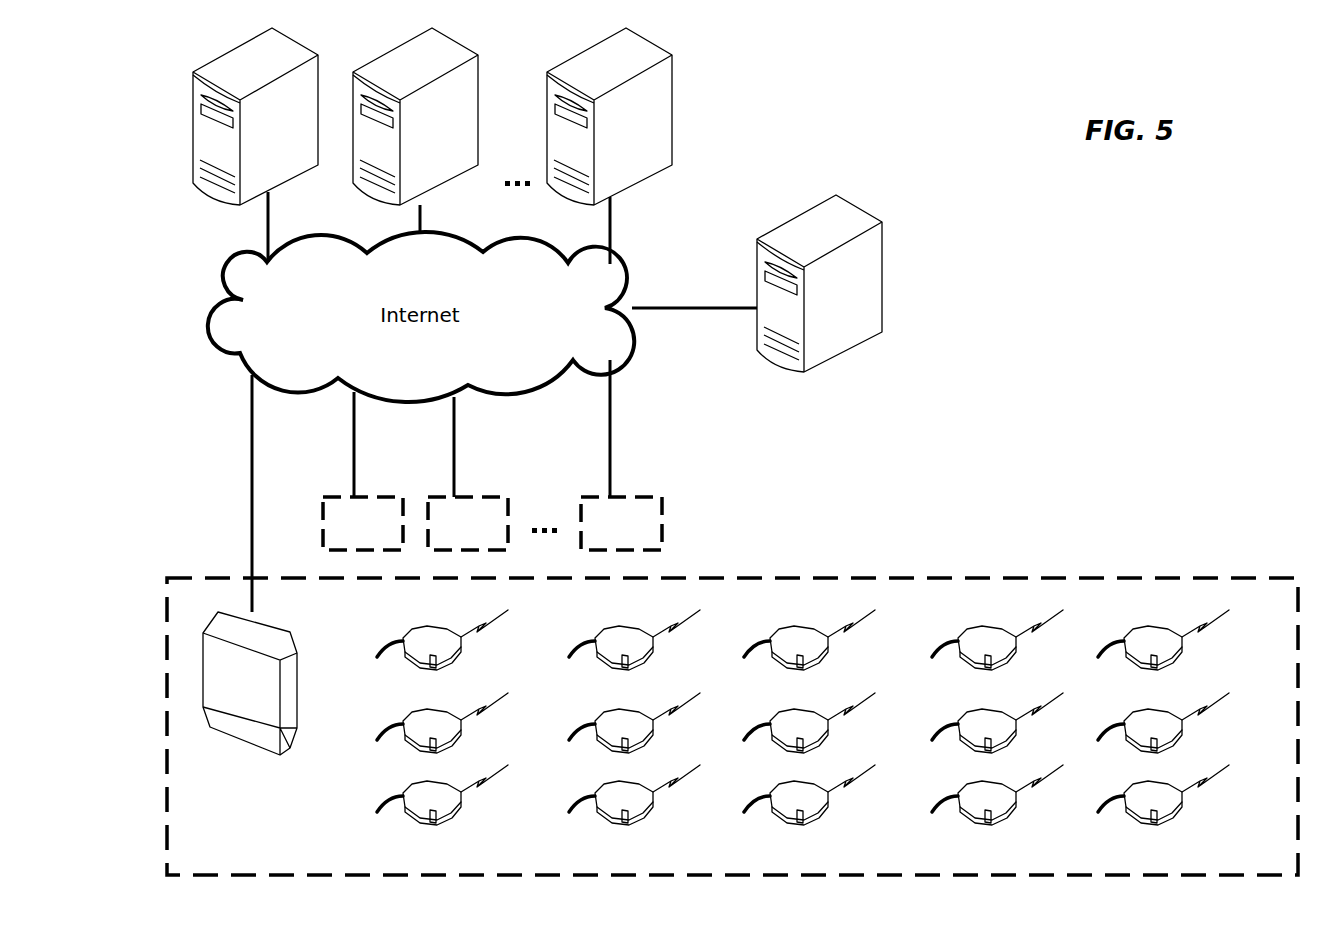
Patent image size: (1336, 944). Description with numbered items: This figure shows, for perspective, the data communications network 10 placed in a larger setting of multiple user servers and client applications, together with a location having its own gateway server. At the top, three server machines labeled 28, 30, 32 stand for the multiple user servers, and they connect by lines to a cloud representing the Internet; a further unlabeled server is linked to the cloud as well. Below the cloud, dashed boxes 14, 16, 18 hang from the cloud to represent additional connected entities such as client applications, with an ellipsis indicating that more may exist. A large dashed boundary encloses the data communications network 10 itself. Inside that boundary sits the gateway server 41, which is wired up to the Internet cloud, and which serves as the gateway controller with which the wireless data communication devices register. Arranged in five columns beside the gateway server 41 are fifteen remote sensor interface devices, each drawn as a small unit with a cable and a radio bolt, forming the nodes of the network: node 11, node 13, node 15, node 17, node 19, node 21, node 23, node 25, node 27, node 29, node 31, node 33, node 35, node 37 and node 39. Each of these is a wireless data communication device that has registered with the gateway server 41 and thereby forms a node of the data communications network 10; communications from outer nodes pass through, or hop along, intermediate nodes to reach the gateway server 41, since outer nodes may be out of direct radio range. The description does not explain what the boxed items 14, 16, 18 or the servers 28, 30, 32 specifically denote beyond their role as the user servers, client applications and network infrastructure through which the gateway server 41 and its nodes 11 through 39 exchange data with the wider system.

The data communications network 10 is at (217, 577).
The hop 14 is at (380, 495).
The hop 16 is at (485, 495).
The client device 18 is at (639, 495).
The server S1 28 is at (262, 126).
The server S2 30 is at (422, 126).
The server Sn 32 is at (616, 126).
The gateway server 41 is at (233, 684).
The node 35 is at (437, 649).
The node 37 is at (438, 732).
The node 39 is at (437, 804).
The node 29 is at (629, 649).
The node 31 is at (630, 732).
The node 33 is at (629, 804).
The node 23 is at (804, 649).
The node 25 is at (805, 732).
The node 27 is at (804, 804).
The node 17 is at (992, 650).
The node 19 is at (993, 733).
The node 21 is at (992, 805).
The remote sensor node 11 is at (1158, 650).
The wireless data communication device 13 is at (1159, 733).
The node 15 is at (1158, 805).